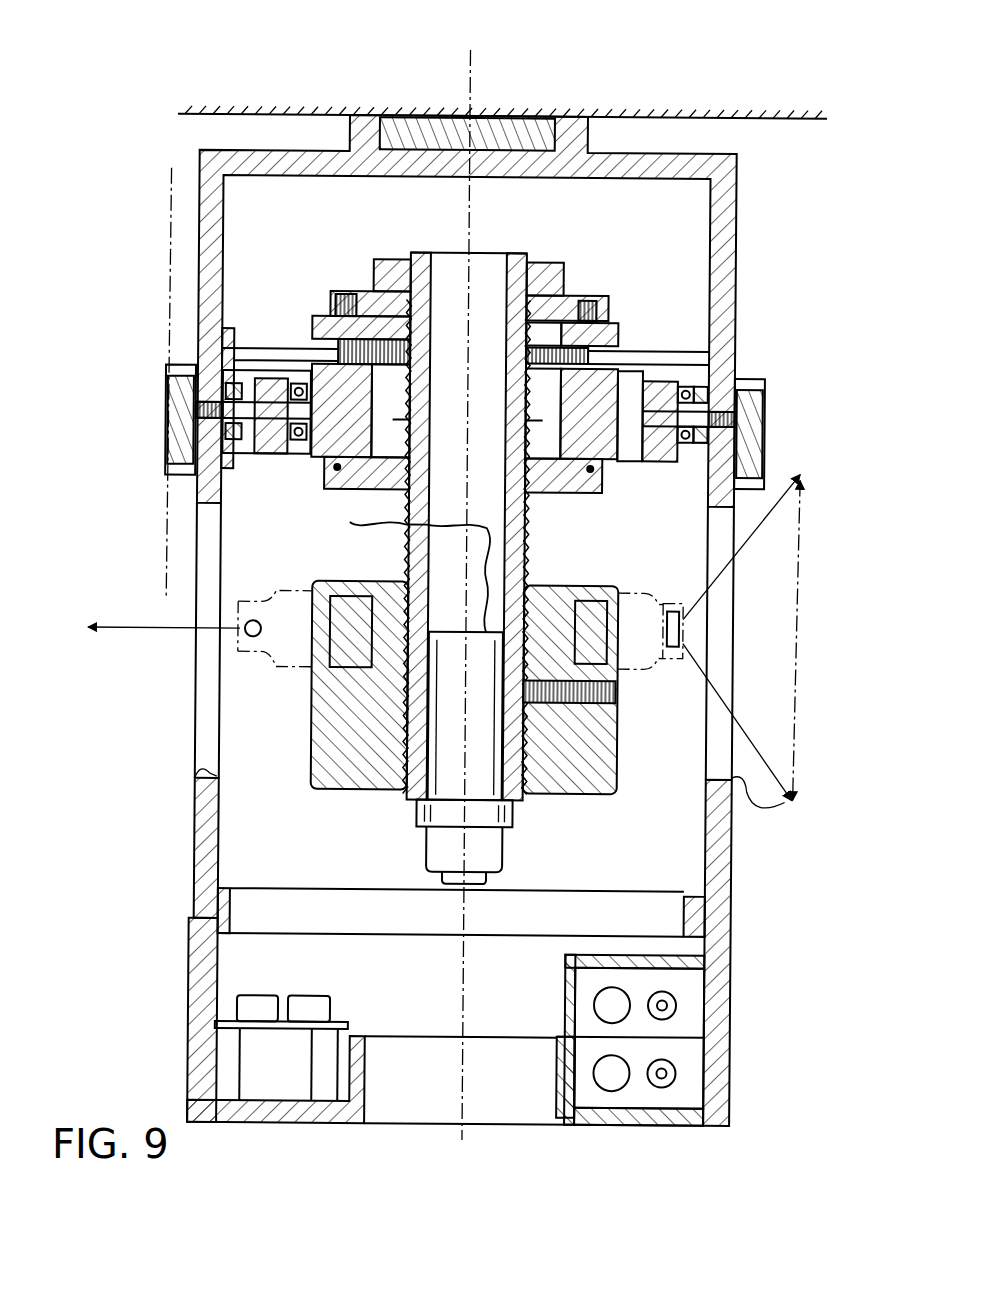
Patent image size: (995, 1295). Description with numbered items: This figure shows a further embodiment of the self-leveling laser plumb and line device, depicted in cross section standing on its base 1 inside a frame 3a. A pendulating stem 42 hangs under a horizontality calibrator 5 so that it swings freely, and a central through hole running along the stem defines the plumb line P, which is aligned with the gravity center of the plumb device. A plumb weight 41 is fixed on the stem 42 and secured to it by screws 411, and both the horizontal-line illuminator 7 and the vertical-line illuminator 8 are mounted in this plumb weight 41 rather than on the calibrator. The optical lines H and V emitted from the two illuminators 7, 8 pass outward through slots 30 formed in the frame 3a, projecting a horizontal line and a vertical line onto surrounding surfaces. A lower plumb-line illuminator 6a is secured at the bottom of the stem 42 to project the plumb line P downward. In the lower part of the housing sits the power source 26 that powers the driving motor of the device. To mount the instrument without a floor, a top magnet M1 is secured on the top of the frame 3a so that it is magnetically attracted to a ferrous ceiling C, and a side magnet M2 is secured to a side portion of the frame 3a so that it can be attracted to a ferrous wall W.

The top magnet M1 is at (508, 122).
The ferrous ceiling C is at (700, 128).
The plumb line P is at (470, 212).
The ferrous wall W is at (178, 300).
The side magnet M2 is at (172, 396).
The horizontality calibrator 5 is at (642, 368).
The horizontal-line illuminator 7 is at (278, 590).
The vertical-line illuminator 8 is at (661, 597).
The pendulating stem 42 is at (522, 584).
The plumb weight 41 is at (580, 585).
The screws 411 is at (617, 690).
The vertical optical line V is at (800, 608).
The horizontal optical line H is at (118, 628).
The slots 30 is at (198, 770).
The frame 3a is at (742, 866).
The lower plumb-line illuminator 6a is at (478, 884).
The base 1 is at (739, 1004).
The power source 26 is at (696, 1087).